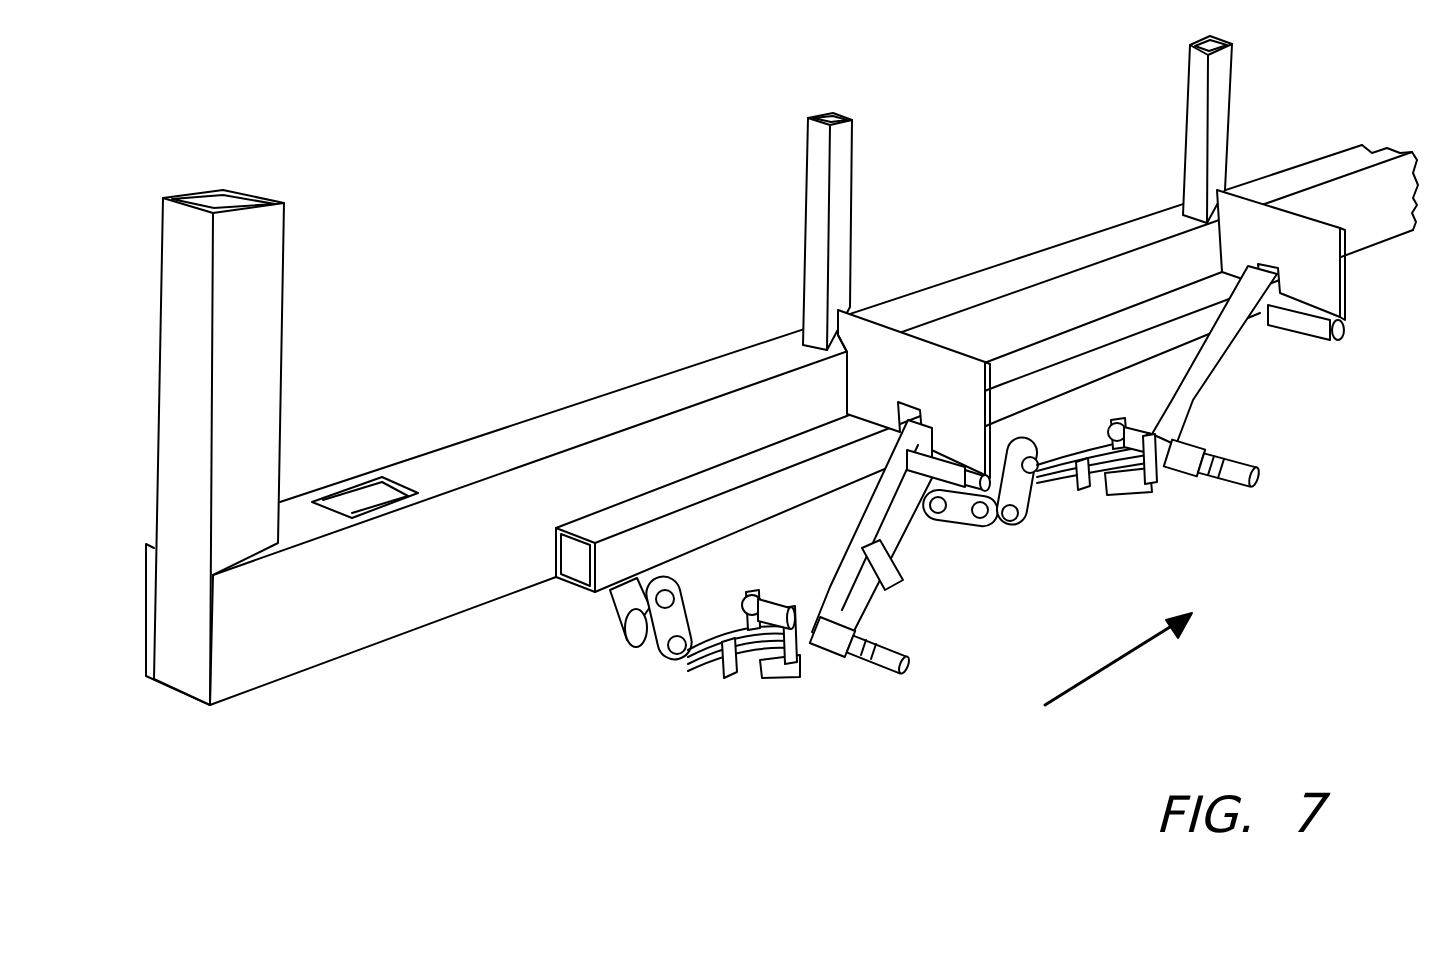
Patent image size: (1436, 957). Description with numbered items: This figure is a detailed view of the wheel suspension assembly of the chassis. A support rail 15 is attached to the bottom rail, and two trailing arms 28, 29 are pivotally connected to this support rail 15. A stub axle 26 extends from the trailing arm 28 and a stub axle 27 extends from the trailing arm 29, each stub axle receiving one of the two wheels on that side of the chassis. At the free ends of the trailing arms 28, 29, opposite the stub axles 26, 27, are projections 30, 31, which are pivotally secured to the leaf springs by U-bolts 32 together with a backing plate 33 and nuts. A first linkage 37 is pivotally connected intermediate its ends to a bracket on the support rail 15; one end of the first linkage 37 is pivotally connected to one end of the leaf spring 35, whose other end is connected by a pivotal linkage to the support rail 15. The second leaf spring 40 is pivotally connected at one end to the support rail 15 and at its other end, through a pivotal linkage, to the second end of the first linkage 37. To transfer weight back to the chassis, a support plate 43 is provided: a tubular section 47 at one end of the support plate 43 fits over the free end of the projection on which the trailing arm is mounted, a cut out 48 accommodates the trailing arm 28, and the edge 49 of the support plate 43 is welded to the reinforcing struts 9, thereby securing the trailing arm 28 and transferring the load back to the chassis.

The reinforcing struts 9 is at (818, 175).
The support rail 15 is at (612, 565).
The stub axle 26 is at (882, 680).
The stub axle 27 is at (1245, 452).
The trailing arm 28 is at (863, 555).
The trailing arm 29 is at (1243, 357).
The projection 30 is at (768, 607).
The projection 31 is at (1136, 420).
The U-bolts 32 is at (748, 605).
The backing plate 33 is at (752, 680).
The leaf spring 35 is at (740, 670).
The first linkage 37 is at (953, 530).
The second leaf spring 40 is at (1102, 485).
The support plate 43 is at (886, 352).
The tubular section 47 is at (1013, 523).
The cut out 48 is at (905, 405).
The edge 49 is at (862, 298).